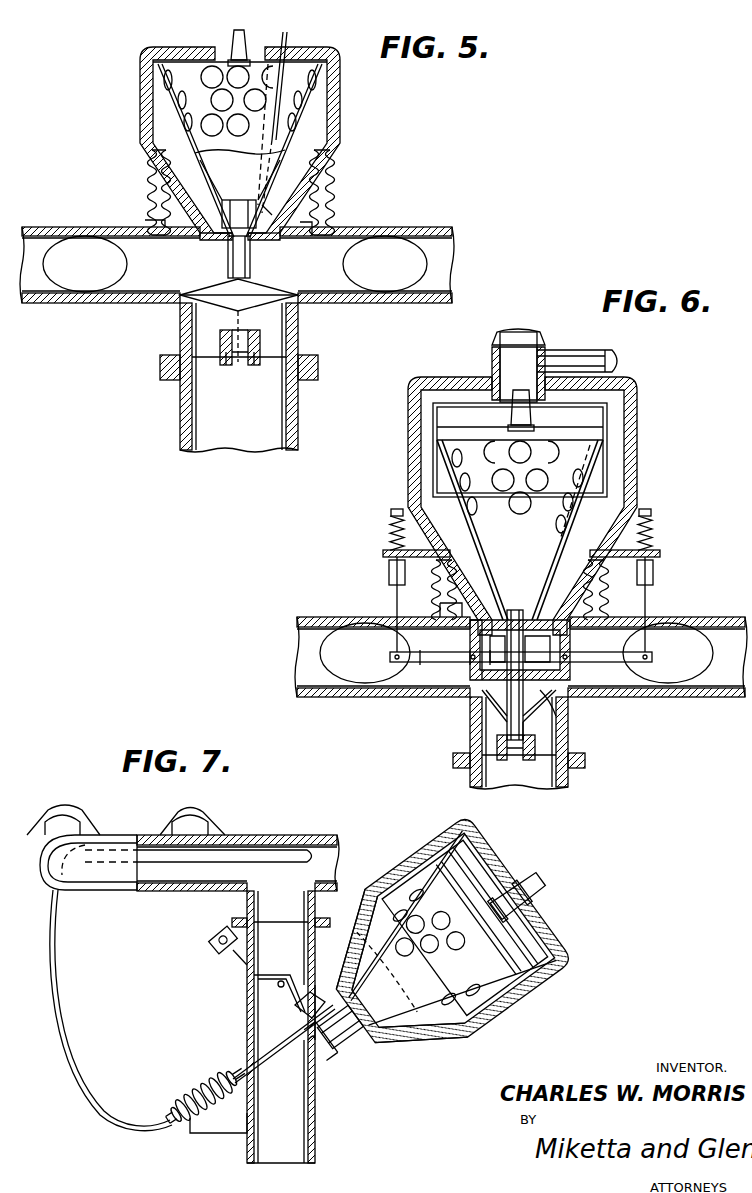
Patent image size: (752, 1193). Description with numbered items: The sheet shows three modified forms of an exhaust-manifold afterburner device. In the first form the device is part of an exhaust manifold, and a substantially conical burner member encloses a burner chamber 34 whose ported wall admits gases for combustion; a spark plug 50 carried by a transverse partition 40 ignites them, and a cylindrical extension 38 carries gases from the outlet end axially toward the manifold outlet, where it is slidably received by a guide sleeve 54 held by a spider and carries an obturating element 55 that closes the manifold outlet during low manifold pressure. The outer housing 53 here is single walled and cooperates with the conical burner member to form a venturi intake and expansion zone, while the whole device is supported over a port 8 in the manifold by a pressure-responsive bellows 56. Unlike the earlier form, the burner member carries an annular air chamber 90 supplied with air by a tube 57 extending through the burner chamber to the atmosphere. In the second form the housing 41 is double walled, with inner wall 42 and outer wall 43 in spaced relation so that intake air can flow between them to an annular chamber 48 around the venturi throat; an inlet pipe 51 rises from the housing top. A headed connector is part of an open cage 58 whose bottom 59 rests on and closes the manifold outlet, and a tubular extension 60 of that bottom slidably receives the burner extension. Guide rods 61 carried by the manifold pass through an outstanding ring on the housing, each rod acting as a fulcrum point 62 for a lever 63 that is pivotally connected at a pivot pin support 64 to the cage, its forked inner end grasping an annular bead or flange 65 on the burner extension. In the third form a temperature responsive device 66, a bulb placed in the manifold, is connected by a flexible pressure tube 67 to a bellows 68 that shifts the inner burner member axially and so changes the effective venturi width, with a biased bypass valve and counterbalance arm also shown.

In FIG. 5, the housing 41 is at (148, 118).
In FIG. 7, the housing 41 is at (566, 970).
In FIG. 5, the spark plug 50 is at (245, 38).
In FIG. 6, the spark plug 50 is at (510, 380).
In FIG. 7, the spark plug 50 is at (532, 886).
In FIG. 5, the burner chamber 34 is at (305, 106).
In FIG. 6, the burner chamber 34 is at (588, 492).
In FIG. 7, the burner chamber 34 is at (392, 928).
In FIG. 5, the tube 57 is at (262, 181).
In FIG. 5, the bellows 56 is at (150, 182).
In FIG. 5, the outer housing 53 is at (334, 182).
In FIG. 5, the port 8 is at (350, 235).
In FIG. 5, the annular air chamber 90 is at (212, 232).
In FIG. 5, the cylindrical extension 38 is at (252, 256).
In FIG. 7, the cylindrical extension 38 is at (340, 1055).
In FIG. 5, the obturating element 55 is at (212, 283).
In FIG. 5, the guide sleeve 54 is at (262, 343).
In FIG. 6, the outer wall 43 is at (637, 451).
In FIG. 7, the outer wall 43 is at (453, 1036).
In FIG. 6, the inner wall 42 is at (612, 417).
In FIG. 7, the inner wall 42 is at (498, 985).
In FIG. 6, the fuel inlet pipe 51 is at (542, 334).
In FIG. 6, the guide rods 61 is at (392, 580).
In FIG. 6, the annular bead or flange 65 is at (514, 645).
In FIG. 6, the open cage 58 is at (570, 632).
In FIG. 6, the fulcrum point 62 is at (390, 656).
In FIG. 6, the pivot pin support 64 is at (472, 662).
In FIG. 6, the lever 63 is at (418, 665).
In FIG. 6, the bottom 59 is at (560, 702).
In FIG. 6, the tubular extension 60 is at (540, 722).
In FIG. 7, the temperature responsive device 66 is at (157, 850).
In FIG. 7, the flexible pressure tube 67 is at (62, 1012).
In FIG. 7, the bellows 68 is at (184, 1085).
In FIG. 7, the transverse partition 40 is at (524, 942).
In FIG. 7, the annular chamber 48 is at (390, 1027).